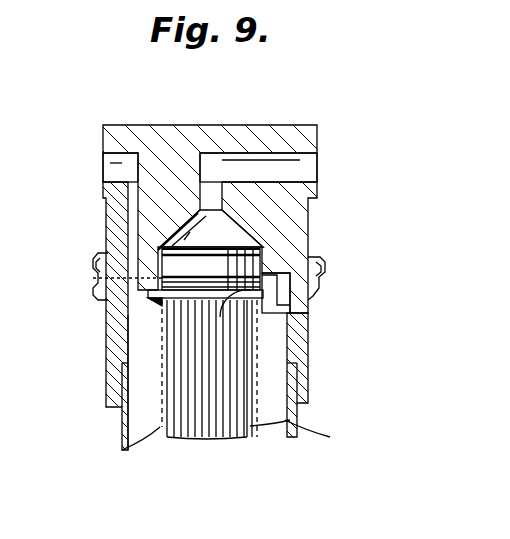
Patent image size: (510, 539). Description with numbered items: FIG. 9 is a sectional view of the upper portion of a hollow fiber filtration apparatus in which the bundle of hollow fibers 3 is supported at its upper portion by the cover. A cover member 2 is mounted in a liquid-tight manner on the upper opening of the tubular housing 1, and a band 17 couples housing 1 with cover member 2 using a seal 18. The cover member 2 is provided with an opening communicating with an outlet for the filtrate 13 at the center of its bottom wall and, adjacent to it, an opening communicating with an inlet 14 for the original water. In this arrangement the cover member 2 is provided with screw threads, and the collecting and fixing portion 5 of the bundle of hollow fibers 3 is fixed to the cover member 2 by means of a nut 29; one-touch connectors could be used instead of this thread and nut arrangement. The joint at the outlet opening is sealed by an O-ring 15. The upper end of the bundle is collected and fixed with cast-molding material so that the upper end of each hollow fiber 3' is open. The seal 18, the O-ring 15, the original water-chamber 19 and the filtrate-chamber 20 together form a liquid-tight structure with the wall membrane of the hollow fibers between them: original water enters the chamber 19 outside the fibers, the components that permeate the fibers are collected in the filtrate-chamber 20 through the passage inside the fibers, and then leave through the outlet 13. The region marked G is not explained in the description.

The cover member 2 is at (276, 127).
The outlet for the filtrate 13 is at (308, 166).
The inlet for the original water 14 is at (108, 171).
The filtrate-chamber 20 is at (227, 230).
The collecting and fixing portion 5 is at (265, 240).
The O-ring 15 is at (137, 245).
The band 17 is at (327, 273).
The seal 18 is at (318, 285).
The nut 29 is at (300, 315).
The bundle of hollow fibers 3 is at (270, 368).
The hollow fiber 3' is at (313, 415).
The tubular housing 1 is at (262, 430).
The original water-chamber 19 is at (147, 418).
The gap G is at (150, 450).